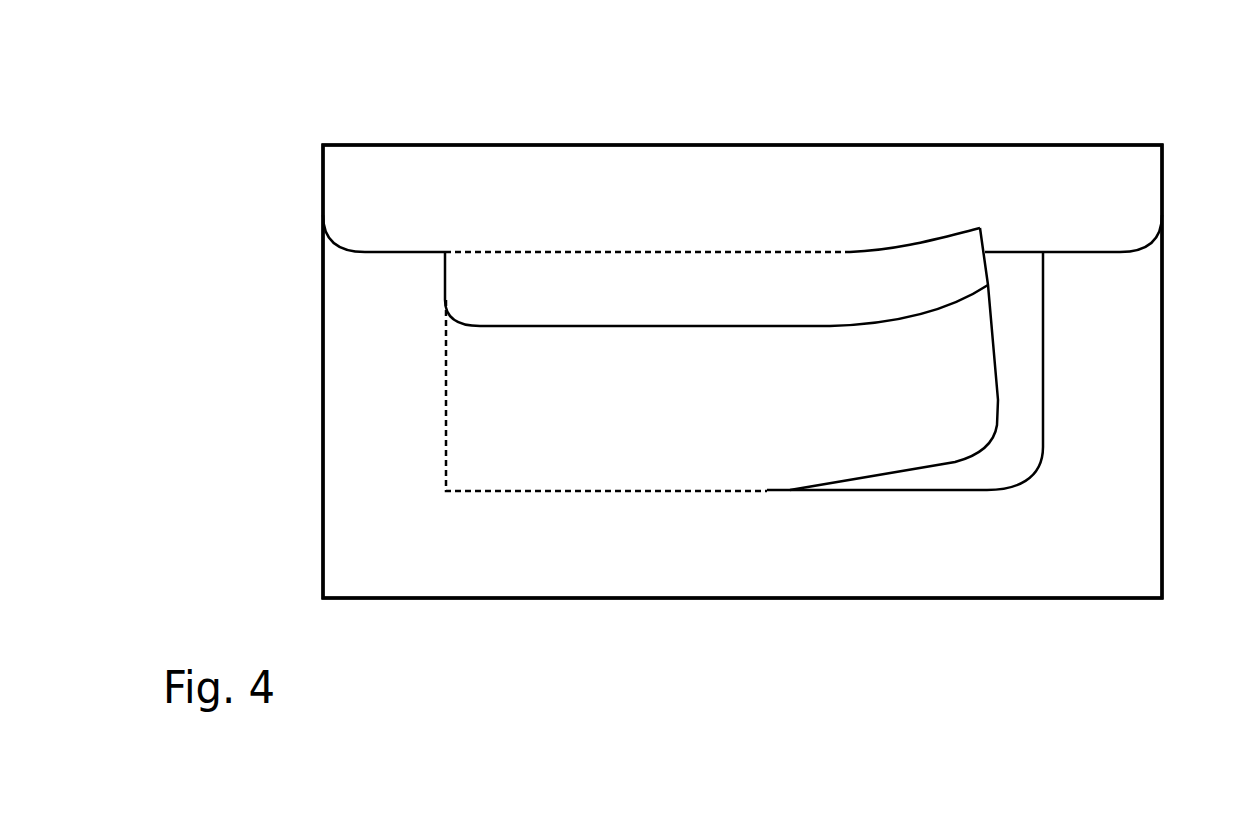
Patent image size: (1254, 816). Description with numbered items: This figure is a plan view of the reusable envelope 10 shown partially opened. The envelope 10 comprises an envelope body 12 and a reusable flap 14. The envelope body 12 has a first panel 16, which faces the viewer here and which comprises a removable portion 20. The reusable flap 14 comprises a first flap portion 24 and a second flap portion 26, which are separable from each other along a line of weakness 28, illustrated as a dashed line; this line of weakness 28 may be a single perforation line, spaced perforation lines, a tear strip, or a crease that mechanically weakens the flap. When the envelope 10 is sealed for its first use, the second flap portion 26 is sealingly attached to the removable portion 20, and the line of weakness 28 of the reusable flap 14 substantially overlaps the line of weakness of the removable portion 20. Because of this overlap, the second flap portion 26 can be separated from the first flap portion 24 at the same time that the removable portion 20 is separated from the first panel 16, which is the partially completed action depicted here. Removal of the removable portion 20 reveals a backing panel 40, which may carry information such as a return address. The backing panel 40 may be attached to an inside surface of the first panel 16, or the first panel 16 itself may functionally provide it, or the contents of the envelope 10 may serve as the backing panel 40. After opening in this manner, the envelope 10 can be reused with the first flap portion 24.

The envelope 10 is at (895, 98).
The envelope body 12 is at (1128, 398).
The reusable flap 14 is at (520, 223).
The first panel 16 is at (347, 490).
The removable portion 20 is at (669, 417).
The first flap portion 24 is at (644, 206).
The second flap portion 26 is at (641, 300).
The line of weakness 28 is at (705, 252).
The backing panel 40 is at (975, 473).